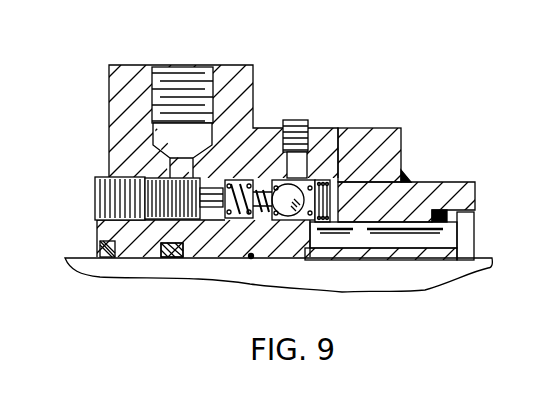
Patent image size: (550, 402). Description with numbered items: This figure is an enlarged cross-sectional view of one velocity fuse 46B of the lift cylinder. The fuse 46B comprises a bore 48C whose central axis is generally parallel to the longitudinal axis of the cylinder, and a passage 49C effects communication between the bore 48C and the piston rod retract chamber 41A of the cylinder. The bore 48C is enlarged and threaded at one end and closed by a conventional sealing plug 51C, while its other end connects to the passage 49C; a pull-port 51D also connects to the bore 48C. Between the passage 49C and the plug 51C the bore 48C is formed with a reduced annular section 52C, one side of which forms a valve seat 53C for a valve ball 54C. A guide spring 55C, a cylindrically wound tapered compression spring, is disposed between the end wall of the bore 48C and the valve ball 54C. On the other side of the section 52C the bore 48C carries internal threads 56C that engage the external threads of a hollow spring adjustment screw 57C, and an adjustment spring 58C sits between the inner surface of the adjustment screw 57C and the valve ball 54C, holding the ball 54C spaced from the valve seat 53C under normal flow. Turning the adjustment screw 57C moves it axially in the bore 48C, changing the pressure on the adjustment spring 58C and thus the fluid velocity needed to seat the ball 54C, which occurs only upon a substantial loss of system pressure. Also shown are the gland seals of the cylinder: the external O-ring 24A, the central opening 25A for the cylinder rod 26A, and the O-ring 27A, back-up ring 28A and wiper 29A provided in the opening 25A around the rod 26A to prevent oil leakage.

The external O-ring 24A is at (439, 210).
The central opening 25A is at (255, 260).
The cylinder rod 26A is at (405, 283).
The O-ring 27A is at (173, 258).
The back-up ring 28A is at (165, 258).
The wiper 29A is at (107, 258).
The piston rod retract chamber 41A is at (468, 224).
The fuse 46B is at (113, 174).
The bore 48C is at (158, 180).
The passage 49C is at (430, 243).
The sealing plug 51C is at (97, 176).
The pull-port 51D is at (206, 78).
The reduced annular section 52C is at (278, 123).
The valve seat 53C is at (287, 251).
The valve ball 54C is at (295, 217).
The guide spring 55C is at (321, 182).
The internal threads 56C is at (258, 118).
The spring adjustment screw 57C is at (213, 221).
The adjustment spring 58C is at (264, 192).